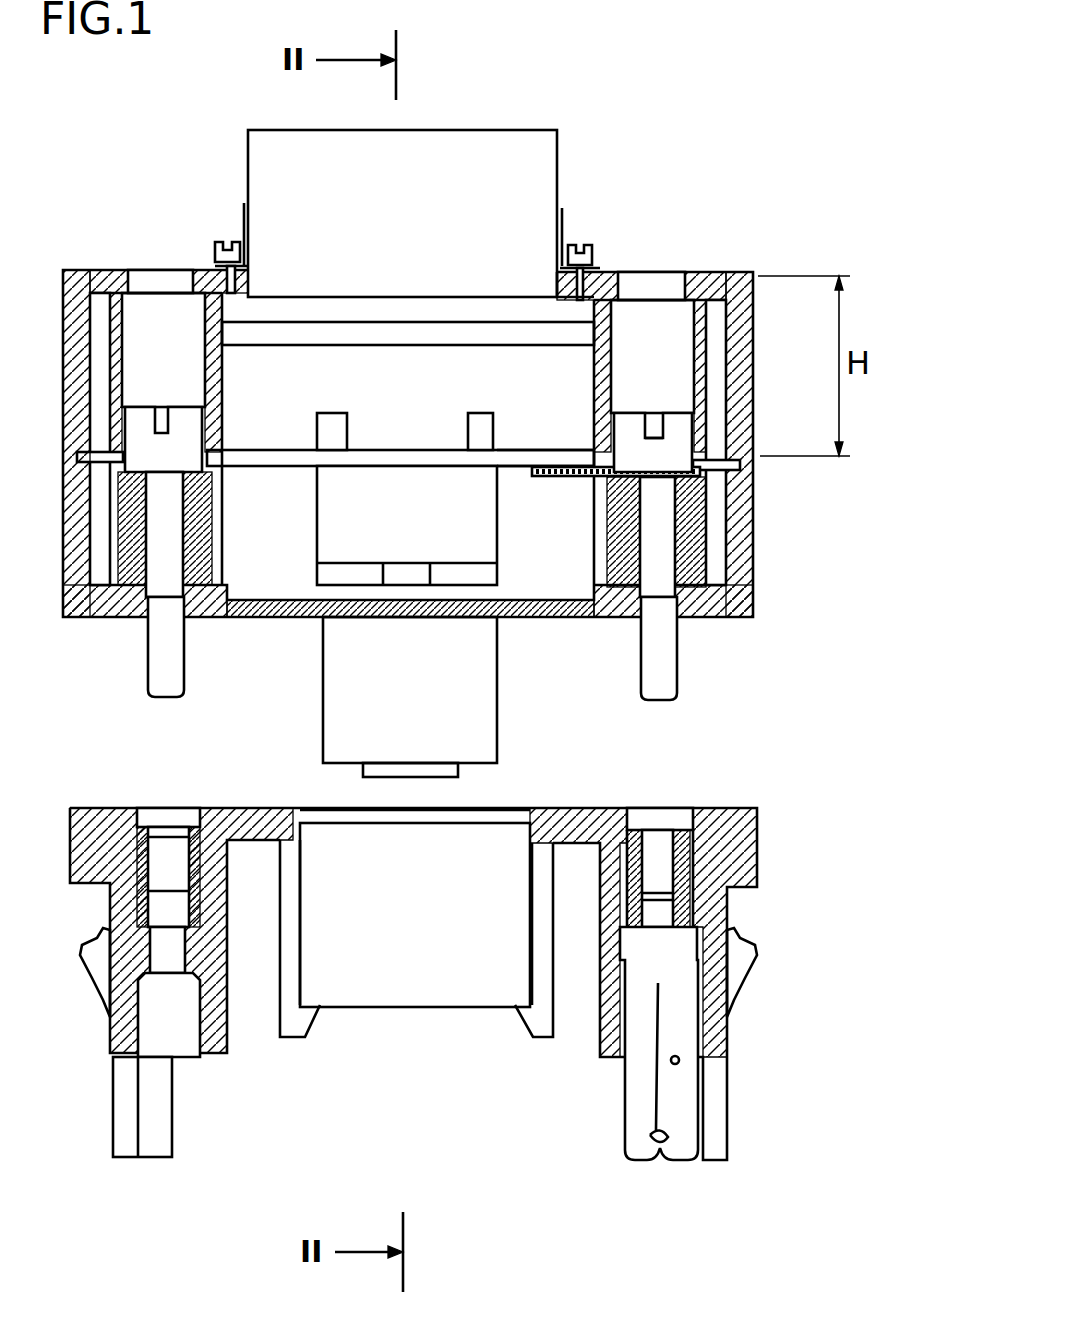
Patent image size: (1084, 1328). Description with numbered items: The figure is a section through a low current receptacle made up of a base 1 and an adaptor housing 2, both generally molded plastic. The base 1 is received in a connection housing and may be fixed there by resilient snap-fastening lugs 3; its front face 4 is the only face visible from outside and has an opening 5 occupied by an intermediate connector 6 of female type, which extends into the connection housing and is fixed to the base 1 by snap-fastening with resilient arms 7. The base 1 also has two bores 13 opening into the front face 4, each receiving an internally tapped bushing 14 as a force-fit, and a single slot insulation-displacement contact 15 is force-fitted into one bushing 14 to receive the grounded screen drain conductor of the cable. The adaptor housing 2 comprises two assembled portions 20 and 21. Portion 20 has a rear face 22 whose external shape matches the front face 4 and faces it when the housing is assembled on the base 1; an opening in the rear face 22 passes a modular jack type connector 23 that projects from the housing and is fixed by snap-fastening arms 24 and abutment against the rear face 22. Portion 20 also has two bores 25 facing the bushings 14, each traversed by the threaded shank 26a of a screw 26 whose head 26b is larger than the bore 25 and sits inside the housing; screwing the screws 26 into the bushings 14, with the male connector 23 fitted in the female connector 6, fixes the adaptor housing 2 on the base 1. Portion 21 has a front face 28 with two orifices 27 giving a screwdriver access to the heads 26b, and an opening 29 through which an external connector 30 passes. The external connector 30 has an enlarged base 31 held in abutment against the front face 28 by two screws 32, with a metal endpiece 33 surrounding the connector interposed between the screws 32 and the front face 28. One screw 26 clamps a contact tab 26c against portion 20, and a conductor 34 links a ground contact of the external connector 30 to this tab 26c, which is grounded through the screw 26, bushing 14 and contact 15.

The base 1 is at (447, 936).
The adaptor housing 2 is at (460, 423).
The resilient snap-fastening lugs 3 is at (733, 967).
The front face 4 is at (250, 805).
The opening 5 is at (510, 818).
The intermediate connector 6 is at (403, 985).
The resilient arms 7 is at (546, 997).
The bores 13 is at (203, 887).
The internally tapped bushing 14 is at (105, 806).
The single slot insulation-displacement contact 15 is at (682, 1033).
The portion 20 is at (755, 598).
The portion 21 is at (758, 302).
The rear face 22 is at (585, 620).
The modular jack type connector 23 is at (477, 687).
The snap-fastening arms 24 is at (327, 430).
The bores 25 is at (683, 580).
The screw 26 is at (650, 365).
The threaded shank 26a is at (658, 677).
The head 26b is at (684, 432).
The contact tab 26c is at (578, 475).
The orifices 27 is at (148, 282).
The front face 28 is at (86, 268).
The opening 29 is at (557, 295).
The external connector 30 is at (506, 153).
The enlarged base 31 is at (279, 314).
The screws 32 is at (240, 254).
The metal endpiece 33 is at (213, 257).
The conductor 34 is at (557, 463).